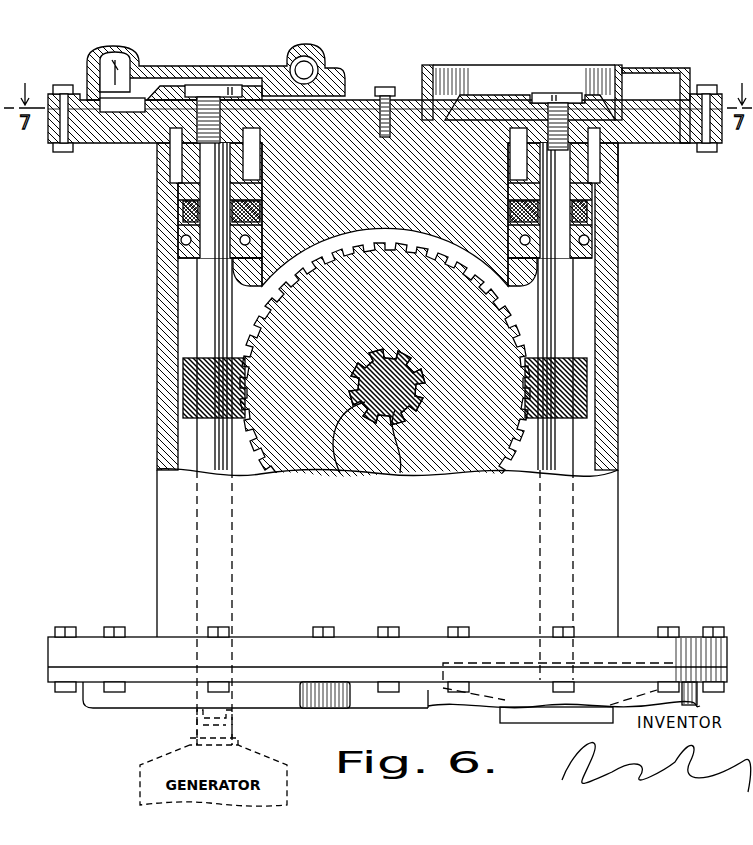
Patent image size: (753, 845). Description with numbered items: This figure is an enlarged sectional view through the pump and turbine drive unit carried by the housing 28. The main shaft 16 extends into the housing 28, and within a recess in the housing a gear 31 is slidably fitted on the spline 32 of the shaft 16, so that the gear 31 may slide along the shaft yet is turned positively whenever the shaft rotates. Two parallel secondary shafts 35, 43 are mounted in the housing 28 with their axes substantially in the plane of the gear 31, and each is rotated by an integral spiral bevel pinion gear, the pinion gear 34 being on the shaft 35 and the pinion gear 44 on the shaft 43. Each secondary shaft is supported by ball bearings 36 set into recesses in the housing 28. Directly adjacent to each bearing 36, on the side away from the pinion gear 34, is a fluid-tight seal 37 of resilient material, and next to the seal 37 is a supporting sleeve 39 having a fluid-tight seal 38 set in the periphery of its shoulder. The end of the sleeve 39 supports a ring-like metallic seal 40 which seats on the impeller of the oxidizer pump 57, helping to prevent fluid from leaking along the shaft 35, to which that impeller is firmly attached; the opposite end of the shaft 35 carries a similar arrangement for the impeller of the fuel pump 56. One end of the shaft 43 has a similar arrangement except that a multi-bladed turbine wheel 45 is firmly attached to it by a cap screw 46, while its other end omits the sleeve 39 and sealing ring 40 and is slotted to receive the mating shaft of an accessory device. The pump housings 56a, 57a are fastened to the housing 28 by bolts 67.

The shaft 16 is at (343, 472).
The housing 28 is at (157, 448).
The gear 31 is at (515, 304).
The spline 32 is at (367, 470).
The spiral bevel pinion gear 34 is at (598, 420).
The secondary shaft 35 is at (578, 335).
The ball bearing 36 is at (167, 251).
The fluid-tight seal 37 is at (618, 207).
The fluid-tight seal 38 is at (618, 188).
The supporting sleeve 39 is at (596, 172).
The ring-like metallic seal 40 is at (618, 158).
The secondary shaft 43 is at (197, 300).
The spiral bevel pinion gear 44 is at (193, 358).
The multi-bladed turbine wheel 45 is at (253, 90).
The cap screw 46 is at (208, 85).
The fuel pump 56 is at (508, 690).
The housing 56a is at (427, 698).
The oxidizer pump 57 is at (470, 76).
The housing 57a is at (420, 72).
The bolt 67 is at (60, 85).